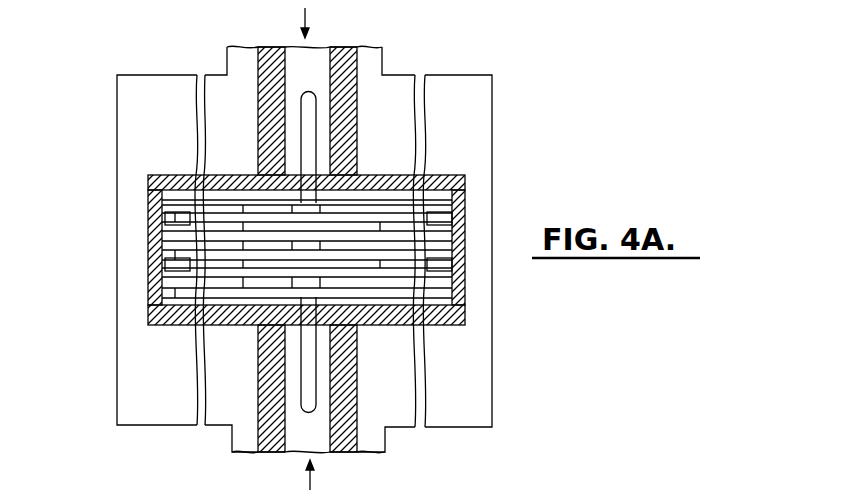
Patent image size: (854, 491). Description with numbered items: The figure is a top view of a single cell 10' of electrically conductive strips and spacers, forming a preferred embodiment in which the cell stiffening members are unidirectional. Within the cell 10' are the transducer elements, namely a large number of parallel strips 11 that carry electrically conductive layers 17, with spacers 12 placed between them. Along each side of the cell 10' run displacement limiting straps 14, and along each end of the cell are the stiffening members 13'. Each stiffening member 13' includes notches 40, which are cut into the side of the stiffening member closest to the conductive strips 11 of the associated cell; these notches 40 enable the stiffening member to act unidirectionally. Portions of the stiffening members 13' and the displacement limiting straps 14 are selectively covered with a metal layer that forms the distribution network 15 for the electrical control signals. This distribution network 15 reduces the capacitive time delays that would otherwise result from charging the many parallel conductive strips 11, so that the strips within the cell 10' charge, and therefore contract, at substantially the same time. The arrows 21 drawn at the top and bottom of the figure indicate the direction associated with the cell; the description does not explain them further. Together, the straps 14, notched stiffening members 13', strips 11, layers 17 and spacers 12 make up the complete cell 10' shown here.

The cell 10' is at (87, 47).
The conductive strips 11 is at (257, 240).
The spacers 12 is at (385, 250).
The unidirectional cell stiffening members 13' is at (314, 237).
The displacement limiting straps 14 is at (117, 213).
The distribution network 15 is at (357, 133).
The electrically conductive layers 17 is at (175, 250).
The direction of force arrows 21 is at (312, 14).
The notches 40 is at (345, 95).